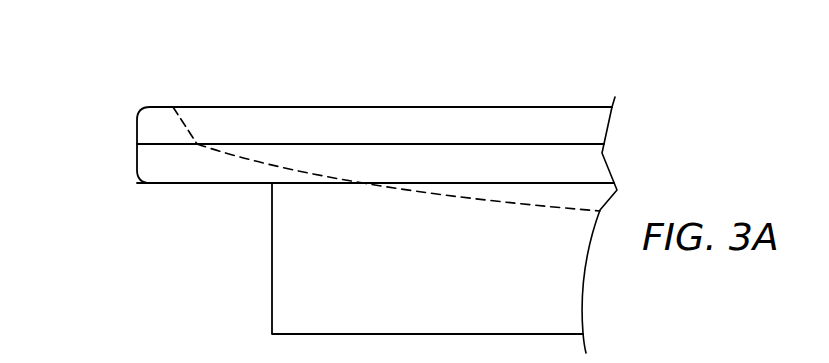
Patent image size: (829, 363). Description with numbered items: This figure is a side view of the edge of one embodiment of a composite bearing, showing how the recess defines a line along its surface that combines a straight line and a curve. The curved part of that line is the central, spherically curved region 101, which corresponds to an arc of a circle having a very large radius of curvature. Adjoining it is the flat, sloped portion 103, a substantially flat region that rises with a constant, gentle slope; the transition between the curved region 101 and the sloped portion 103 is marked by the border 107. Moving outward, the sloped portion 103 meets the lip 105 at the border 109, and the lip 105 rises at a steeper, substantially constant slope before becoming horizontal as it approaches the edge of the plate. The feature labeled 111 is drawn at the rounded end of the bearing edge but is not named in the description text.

The central, spherically curved region 101 is at (498, 200).
The flat, sloped portion 103 is at (305, 167).
The lip 105 is at (186, 131).
The border 107 is at (368, 187).
The border 109 is at (195, 144).
The rounded end 111 is at (132, 127).